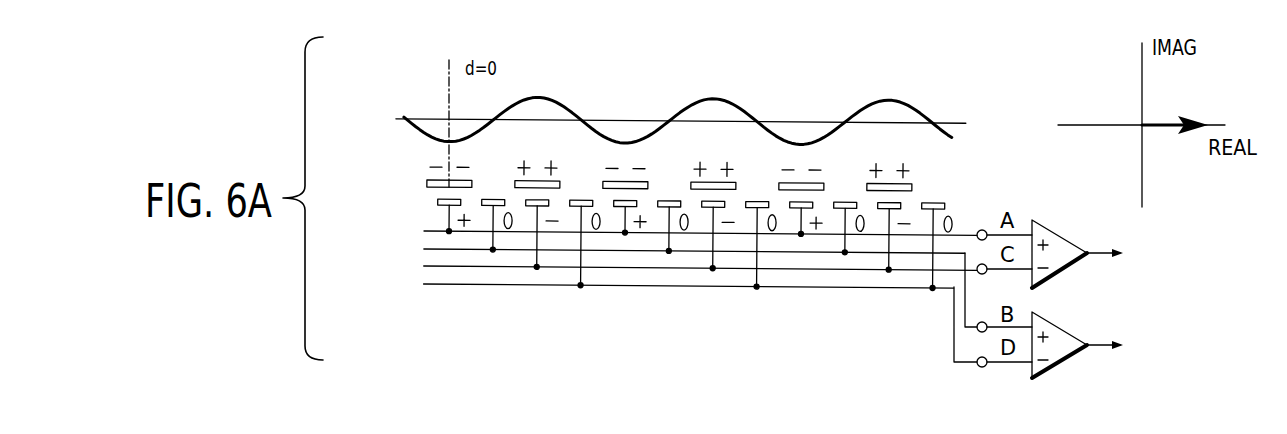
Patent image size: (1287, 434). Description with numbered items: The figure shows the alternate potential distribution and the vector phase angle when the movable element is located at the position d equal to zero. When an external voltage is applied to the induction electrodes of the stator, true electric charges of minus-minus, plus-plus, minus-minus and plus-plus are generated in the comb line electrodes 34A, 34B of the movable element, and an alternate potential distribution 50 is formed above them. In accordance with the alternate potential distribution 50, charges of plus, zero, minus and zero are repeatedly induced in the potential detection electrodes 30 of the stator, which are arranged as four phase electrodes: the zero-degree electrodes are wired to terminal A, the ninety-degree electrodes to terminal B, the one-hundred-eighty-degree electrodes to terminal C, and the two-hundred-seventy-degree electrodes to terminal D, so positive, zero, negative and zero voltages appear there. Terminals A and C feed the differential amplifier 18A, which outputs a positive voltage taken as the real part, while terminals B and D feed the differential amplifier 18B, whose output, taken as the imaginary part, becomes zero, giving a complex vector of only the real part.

The alternate potential distribution 50 is at (889, 96).
The comb line electrode 34A is at (427, 184).
The comb line electrode 34B is at (669, 175).
The potential detection electrodes 30 is at (437, 201).
The differential amplifier 18A is at (1073, 245).
The differential amplifier 18B is at (1073, 337).